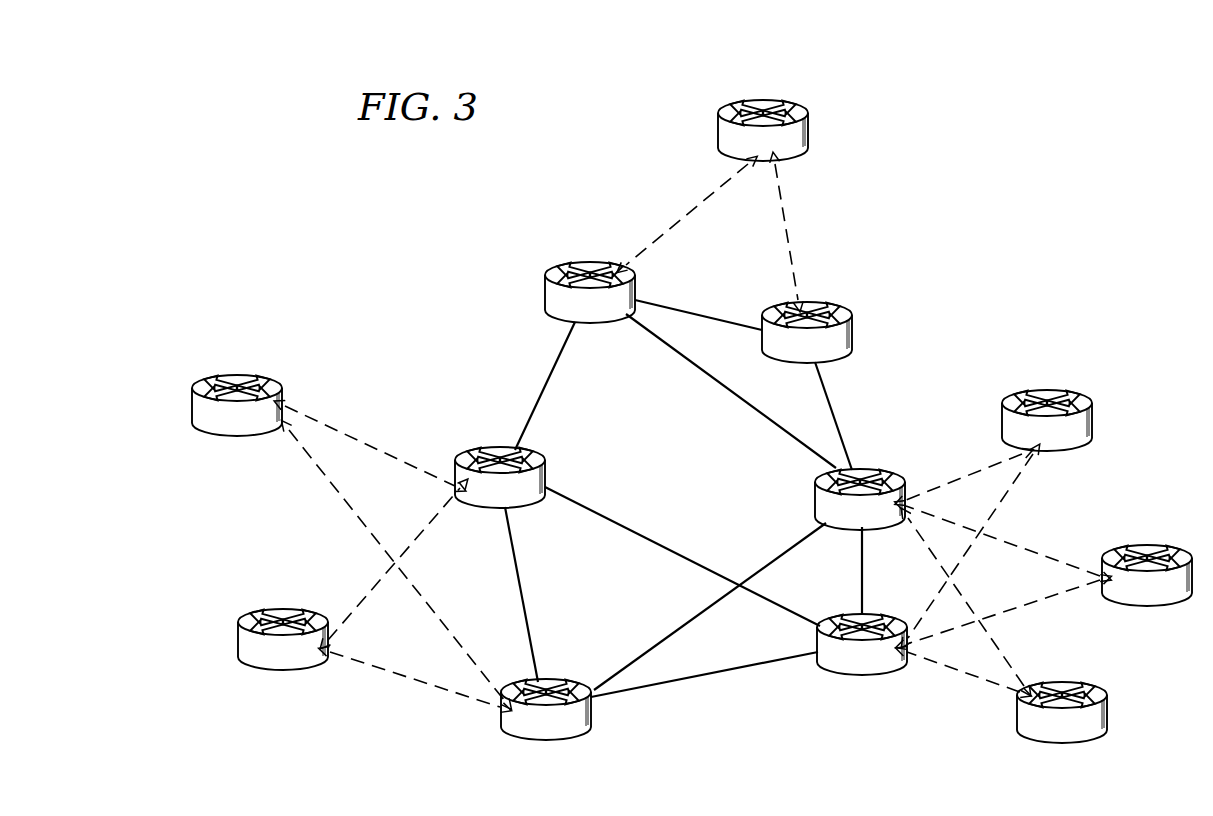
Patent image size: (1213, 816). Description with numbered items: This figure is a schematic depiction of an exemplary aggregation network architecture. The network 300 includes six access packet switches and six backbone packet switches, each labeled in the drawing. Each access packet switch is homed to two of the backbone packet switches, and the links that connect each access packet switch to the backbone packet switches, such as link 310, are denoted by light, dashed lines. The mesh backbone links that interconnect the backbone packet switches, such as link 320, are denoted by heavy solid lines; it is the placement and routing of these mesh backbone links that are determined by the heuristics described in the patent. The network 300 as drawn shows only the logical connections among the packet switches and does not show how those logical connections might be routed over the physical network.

The network 300 is at (953, 234).
The link 310 is at (371, 440).
The link 320 is at (707, 677).